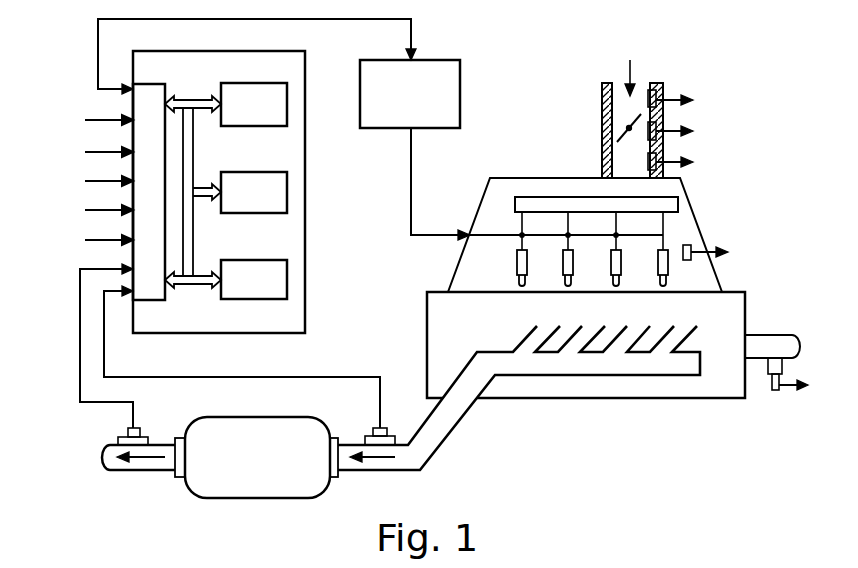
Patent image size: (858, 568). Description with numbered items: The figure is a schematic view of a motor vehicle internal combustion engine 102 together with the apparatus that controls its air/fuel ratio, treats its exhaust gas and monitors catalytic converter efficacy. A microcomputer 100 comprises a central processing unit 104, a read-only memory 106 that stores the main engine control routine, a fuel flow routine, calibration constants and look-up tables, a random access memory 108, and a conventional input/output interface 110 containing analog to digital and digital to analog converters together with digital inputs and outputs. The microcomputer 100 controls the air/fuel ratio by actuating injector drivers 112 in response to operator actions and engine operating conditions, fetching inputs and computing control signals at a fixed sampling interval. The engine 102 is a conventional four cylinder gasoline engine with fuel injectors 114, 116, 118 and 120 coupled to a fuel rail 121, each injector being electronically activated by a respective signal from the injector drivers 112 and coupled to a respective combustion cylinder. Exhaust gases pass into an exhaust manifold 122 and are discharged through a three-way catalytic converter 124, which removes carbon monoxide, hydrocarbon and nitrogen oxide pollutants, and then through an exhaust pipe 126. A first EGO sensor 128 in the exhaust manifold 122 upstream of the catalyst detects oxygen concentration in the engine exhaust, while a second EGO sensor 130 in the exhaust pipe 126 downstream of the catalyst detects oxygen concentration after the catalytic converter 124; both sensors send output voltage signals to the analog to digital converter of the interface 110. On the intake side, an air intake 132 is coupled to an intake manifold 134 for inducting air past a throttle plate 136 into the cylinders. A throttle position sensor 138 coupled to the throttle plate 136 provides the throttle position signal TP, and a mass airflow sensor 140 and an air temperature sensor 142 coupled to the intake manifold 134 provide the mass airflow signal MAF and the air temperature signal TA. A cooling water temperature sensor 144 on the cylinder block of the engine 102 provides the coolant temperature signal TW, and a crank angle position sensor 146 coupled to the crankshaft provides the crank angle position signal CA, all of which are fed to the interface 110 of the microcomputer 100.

The microcomputer 100 is at (305, 305).
The internal combustion engine 102 is at (580, 398).
The central processing unit 104 is at (292, 90).
The read-only memory 106 is at (292, 180).
The random access memory 108 is at (292, 268).
The input/output interface 110 is at (148, 84).
The injector drivers 112 is at (456, 72).
The fuel injector 114 is at (518, 282).
The fuel injector 116 is at (565, 282).
The fuel injector 118 is at (613, 282).
The fuel injector 120 is at (653, 283).
The fuel rail 121 is at (535, 197).
The exhaust manifold 122 is at (470, 360).
The three-way catalytic converter 124 is at (243, 469).
The exhaust pipe 126 is at (140, 473).
The first EGO sensor 128 is at (374, 432).
The second EGO sensor 130 is at (128, 431).
The air intake 132 is at (620, 82).
The intake manifold 134 is at (486, 188).
The throttle plate 136 is at (629, 128).
The throttle position sensor 138 is at (658, 152).
The mass airflow sensor 140 is at (663, 174).
The air temperature sensor 142 is at (650, 83).
The cooling water temperature sensor 144 is at (686, 261).
The crank angle position sensor 146 is at (762, 372).